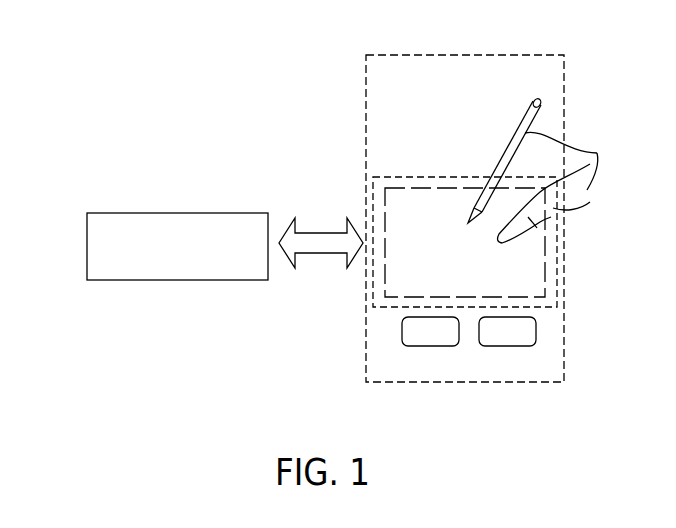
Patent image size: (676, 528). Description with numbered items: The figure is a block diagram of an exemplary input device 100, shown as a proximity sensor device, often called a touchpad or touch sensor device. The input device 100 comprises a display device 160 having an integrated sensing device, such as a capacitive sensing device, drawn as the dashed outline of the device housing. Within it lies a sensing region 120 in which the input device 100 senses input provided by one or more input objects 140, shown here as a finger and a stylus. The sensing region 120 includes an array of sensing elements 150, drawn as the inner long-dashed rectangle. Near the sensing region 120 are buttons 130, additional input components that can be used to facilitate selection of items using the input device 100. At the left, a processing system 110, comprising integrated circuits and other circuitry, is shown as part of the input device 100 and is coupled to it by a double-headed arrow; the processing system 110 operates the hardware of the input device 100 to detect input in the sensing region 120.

The input device 100 is at (317, 88).
The processing system 110 is at (87, 243).
The sensing region 120 is at (558, 257).
The buttons 130 is at (433, 346).
The input objects 140 is at (597, 153).
The array of sensing elements 150 is at (425, 188).
The display device 160 is at (565, 80).